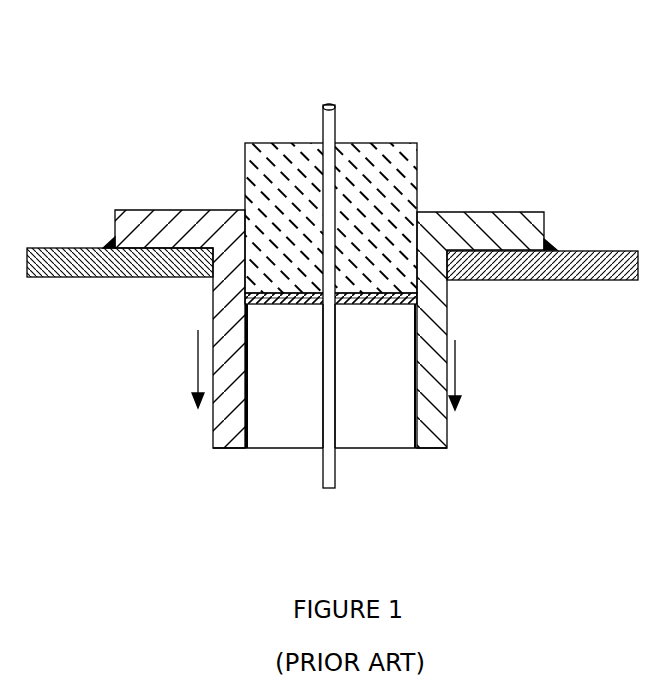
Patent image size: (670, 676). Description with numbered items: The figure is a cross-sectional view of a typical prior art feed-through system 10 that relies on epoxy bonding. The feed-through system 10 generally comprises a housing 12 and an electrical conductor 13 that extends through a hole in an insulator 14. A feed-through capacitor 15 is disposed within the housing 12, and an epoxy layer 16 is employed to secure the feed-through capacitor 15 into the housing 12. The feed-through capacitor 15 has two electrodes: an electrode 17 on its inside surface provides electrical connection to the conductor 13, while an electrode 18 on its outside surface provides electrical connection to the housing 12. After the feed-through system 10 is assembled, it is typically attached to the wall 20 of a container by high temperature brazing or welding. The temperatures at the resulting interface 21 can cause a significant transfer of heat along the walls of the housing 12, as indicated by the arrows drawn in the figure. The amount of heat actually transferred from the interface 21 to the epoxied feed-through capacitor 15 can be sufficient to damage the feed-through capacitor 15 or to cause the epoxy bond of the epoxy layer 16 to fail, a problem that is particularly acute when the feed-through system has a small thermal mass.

The feed-through system 10 is at (67, 77).
The housing 12 is at (155, 212).
The electrical conductor 13 is at (331, 120).
The insulator 14 is at (410, 178).
The feed-through capacitor 15 is at (387, 438).
The epoxy layer 16 is at (418, 300).
The electrode 17 is at (323, 428).
The electrode 18 is at (247, 413).
The wall 20 is at (626, 276).
The interface 21 is at (108, 246).